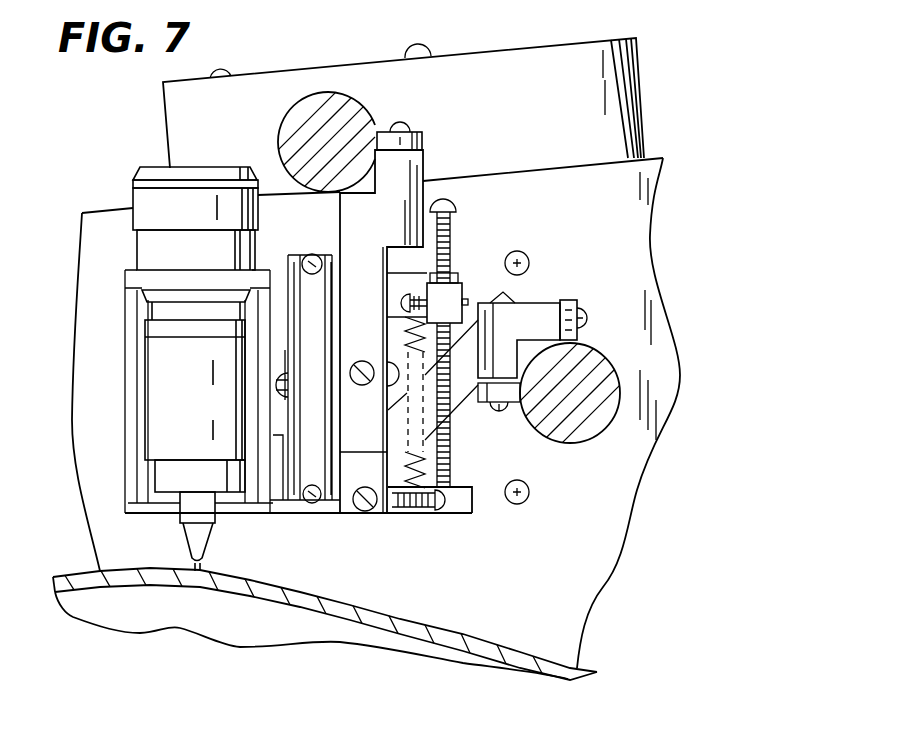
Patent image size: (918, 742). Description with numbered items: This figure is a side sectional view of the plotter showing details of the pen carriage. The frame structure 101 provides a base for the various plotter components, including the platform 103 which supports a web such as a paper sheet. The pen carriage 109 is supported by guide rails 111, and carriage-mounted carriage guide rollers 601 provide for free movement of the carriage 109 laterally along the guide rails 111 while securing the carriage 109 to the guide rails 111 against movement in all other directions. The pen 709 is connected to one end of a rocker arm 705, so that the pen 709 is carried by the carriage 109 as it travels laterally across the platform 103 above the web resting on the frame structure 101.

The frame structure 101 is at (620, 72).
The platform 103 is at (470, 635).
The pen carriage 109 is at (425, 163).
The guide rails 111 is at (343, 107).
The carriage guide rollers 601 is at (418, 132).
The rocker arm 705 is at (467, 503).
The pen 709 is at (157, 403).